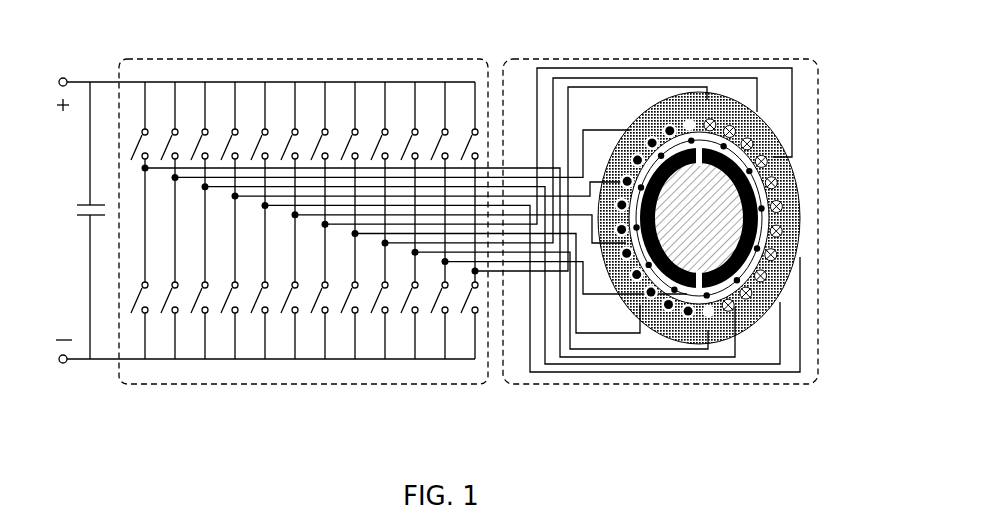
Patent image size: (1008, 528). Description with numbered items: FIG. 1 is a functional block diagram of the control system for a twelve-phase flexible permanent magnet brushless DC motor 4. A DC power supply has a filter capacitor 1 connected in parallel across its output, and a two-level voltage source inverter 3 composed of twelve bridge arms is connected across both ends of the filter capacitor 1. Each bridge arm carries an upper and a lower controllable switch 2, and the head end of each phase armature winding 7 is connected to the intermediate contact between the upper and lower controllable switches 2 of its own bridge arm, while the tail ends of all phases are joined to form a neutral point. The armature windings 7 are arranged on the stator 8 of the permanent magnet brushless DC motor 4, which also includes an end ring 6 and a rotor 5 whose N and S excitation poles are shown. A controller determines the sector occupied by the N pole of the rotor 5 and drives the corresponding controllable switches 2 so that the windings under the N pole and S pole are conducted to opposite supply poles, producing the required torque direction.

The filter capacitor 1 is at (100, 218).
The controllable switch 2 is at (146, 366).
The voltage source inverter 3 is at (213, 384).
The permanent magnet brushless DC motor 4 is at (649, 384).
The rotor 5 is at (723, 239).
The end ring 6 is at (760, 192).
The armature winding 7 is at (725, 125).
The stator 8 is at (687, 116).